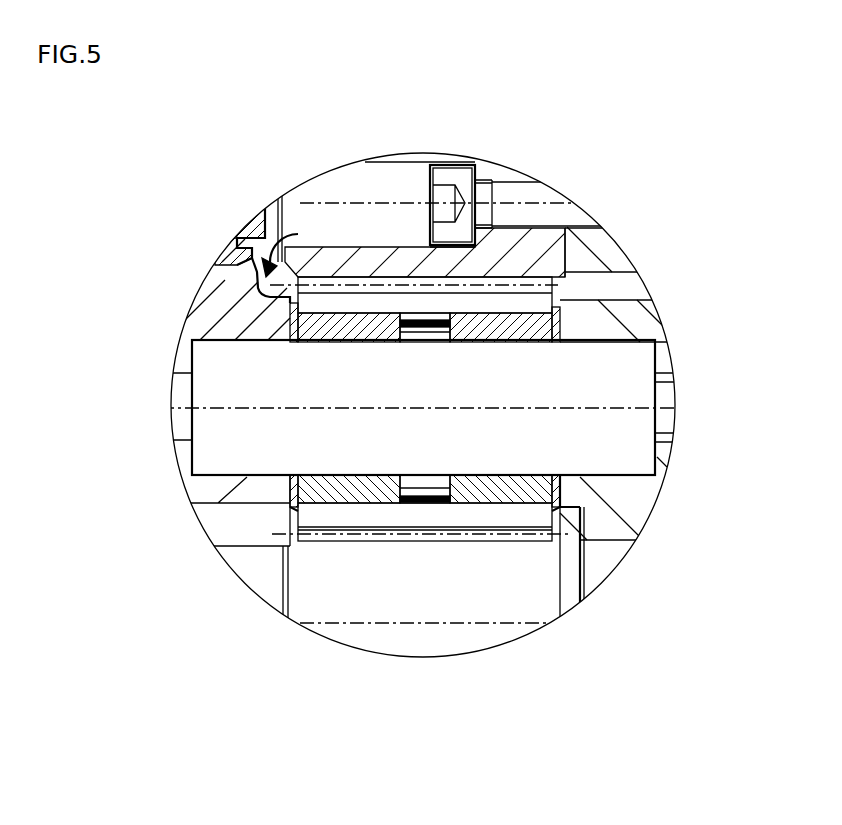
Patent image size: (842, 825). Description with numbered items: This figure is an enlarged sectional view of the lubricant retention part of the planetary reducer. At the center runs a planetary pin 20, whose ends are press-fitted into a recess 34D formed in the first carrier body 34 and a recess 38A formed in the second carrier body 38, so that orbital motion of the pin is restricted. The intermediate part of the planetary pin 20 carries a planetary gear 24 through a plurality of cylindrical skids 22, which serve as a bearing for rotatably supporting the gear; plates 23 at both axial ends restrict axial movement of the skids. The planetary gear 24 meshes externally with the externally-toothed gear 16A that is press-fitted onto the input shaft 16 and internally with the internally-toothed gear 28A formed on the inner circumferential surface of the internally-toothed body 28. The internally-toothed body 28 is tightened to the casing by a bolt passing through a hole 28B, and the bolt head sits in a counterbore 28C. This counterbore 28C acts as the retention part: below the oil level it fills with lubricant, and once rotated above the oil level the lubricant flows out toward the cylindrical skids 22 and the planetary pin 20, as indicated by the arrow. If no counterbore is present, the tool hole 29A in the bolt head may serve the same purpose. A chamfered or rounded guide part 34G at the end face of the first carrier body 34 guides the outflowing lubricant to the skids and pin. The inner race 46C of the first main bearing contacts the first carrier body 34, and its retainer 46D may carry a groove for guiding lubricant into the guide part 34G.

The input shaft 16 is at (405, 647).
The externally-toothed gear 16A is at (575, 533).
The planetary pin 20 is at (228, 452).
The cylindrical skids 22 is at (318, 343).
The plates 23 is at (282, 295).
The planetary gear 24 is at (323, 300).
The internally-toothed body 28 is at (525, 250).
The internally-toothed gear 28A is at (565, 285).
The hole 28B is at (540, 237).
The counterbore 28C is at (440, 257).
The tool hole 29A is at (447, 196).
The first carrier body 34 is at (200, 327).
The recess 34D is at (232, 483).
The guide part 34G is at (253, 286).
The second carrier body 38 is at (632, 320).
The recess 38A is at (622, 480).
The inner race 46C is at (233, 257).
The retainer 46D is at (258, 227).